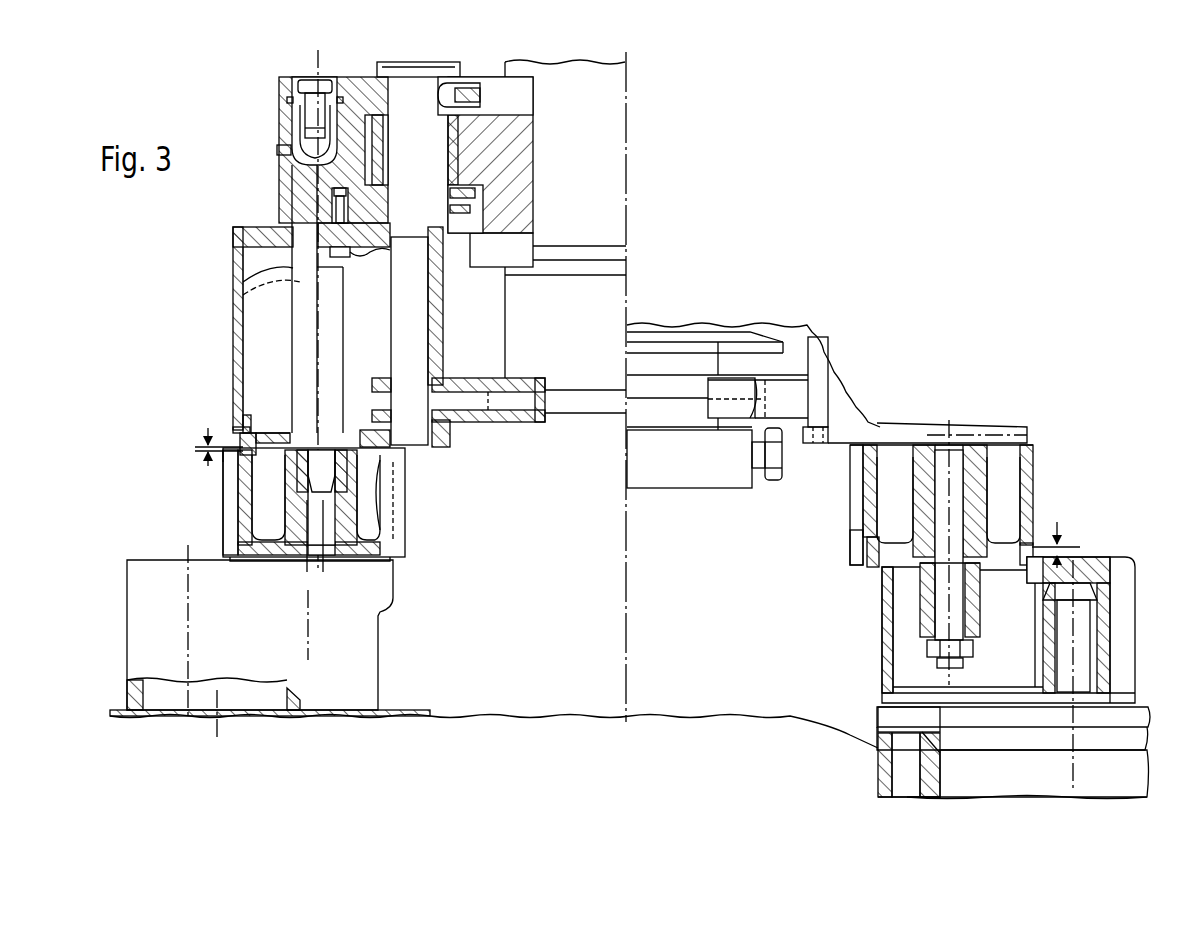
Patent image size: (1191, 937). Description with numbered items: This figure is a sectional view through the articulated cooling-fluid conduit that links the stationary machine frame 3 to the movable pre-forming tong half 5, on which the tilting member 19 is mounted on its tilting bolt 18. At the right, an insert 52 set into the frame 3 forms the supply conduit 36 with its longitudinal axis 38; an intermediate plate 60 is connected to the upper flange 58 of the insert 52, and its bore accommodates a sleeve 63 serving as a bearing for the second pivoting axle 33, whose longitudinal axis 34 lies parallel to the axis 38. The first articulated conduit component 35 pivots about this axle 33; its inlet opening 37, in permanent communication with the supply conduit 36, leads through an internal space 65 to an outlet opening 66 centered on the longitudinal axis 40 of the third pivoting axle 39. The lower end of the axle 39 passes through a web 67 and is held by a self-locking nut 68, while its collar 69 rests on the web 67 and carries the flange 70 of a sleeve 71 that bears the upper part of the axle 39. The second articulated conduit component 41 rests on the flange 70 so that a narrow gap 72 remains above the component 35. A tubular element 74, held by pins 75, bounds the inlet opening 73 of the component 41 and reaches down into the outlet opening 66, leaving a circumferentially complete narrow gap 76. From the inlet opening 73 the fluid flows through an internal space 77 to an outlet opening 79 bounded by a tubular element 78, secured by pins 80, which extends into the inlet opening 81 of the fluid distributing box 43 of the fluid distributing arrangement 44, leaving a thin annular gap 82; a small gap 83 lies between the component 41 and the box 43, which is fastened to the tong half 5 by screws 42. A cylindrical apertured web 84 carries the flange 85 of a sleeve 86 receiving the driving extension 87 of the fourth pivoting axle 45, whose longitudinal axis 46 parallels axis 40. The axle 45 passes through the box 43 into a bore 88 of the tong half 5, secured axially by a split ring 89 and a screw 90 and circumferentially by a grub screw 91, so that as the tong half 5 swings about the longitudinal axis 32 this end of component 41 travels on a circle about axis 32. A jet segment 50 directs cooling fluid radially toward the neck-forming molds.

The frame 3 is at (882, 787).
The pre-forming tong half 5 is at (281, 76).
The tilting bolt 18 is at (455, 63).
The tilting member 19 is at (530, 157).
The longitudinal axis 32 is at (628, 612).
The second pivoting axle 33 is at (1083, 623).
The longitudinal axis 34 is at (188, 606).
The first articulated conduit component 35 is at (124, 572).
The supply conduit 36 is at (285, 712).
The inlet opening 37 is at (188, 716).
The longitudinal axis 38 is at (217, 728).
The third pivoting axle 39 is at (960, 482).
The longitudinal axis 40 is at (308, 630).
The second articulated conduit component 41 is at (221, 512).
The screws 42 is at (352, 256).
The fluid distributing box 43 is at (232, 333).
The fluid distributing arrangement 44 is at (212, 370).
The fourth pivoting axle 45 is at (293, 268).
The longitudinal axis 46 is at (310, 302).
The jet segment 50 is at (489, 422).
The insert 52 is at (948, 778).
The upper flange 58 is at (890, 738).
The intermediate plate 60 is at (1136, 715).
The sleeve 63 is at (1098, 667).
The internal space 65 is at (908, 658).
The outlet opening 66 is at (1032, 565).
The web 67 is at (926, 648).
The self-locking nut 68 is at (928, 660).
The collar 69 is at (925, 575).
The flange 70 is at (882, 570).
The sleeve 71 is at (925, 473).
The gap 72 is at (1058, 548).
The inlet opening 73 is at (1012, 558).
The tubular element 74 is at (877, 552).
The pins 75 is at (836, 542).
The gap 76 is at (880, 594).
The internal space 77 is at (262, 520).
The tubular element 78 is at (258, 454).
The outlet opening 79 is at (257, 433).
The pins 80 is at (231, 462).
The inlet opening 81 is at (248, 412).
The annular gap 82 is at (240, 440).
The gap 83 is at (220, 450).
The cylindrical apertured web 84 is at (352, 515).
The flange 85 is at (288, 440).
The sleeve 86 is at (345, 470).
The driving extension 87 is at (325, 494).
The bore 88 is at (301, 78).
The split ring 89 is at (292, 100).
The screw 90 is at (308, 122).
The grub screw 91 is at (286, 152).